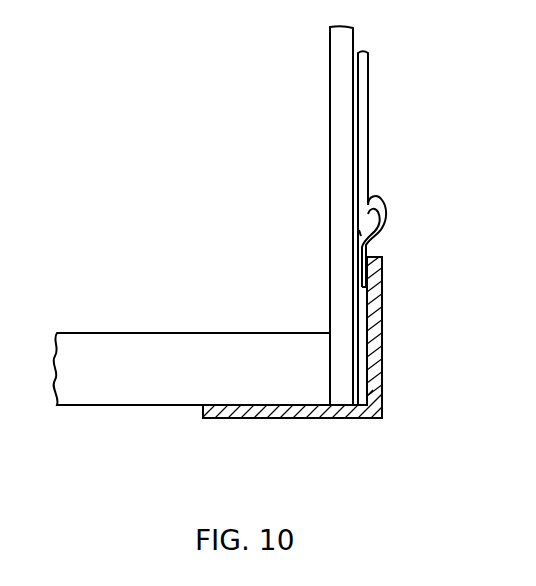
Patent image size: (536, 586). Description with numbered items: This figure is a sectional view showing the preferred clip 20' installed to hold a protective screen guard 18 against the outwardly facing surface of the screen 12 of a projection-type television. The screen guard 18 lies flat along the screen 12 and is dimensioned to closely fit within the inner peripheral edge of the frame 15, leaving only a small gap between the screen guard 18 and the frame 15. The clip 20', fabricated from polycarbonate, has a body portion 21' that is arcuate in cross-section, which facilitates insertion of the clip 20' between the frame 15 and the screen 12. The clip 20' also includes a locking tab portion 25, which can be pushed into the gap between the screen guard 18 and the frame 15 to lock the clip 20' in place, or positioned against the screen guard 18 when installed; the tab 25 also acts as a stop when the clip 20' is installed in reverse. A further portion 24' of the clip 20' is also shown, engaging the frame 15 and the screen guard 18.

The screen 12 is at (330, 94).
The screen guard 18 is at (368, 105).
The clip 20' is at (418, 214).
The hook leg 24' is at (423, 252).
The locking tab portion 25 is at (358, 232).
The body portion 21' is at (304, 275).
The frame 15 is at (382, 358).